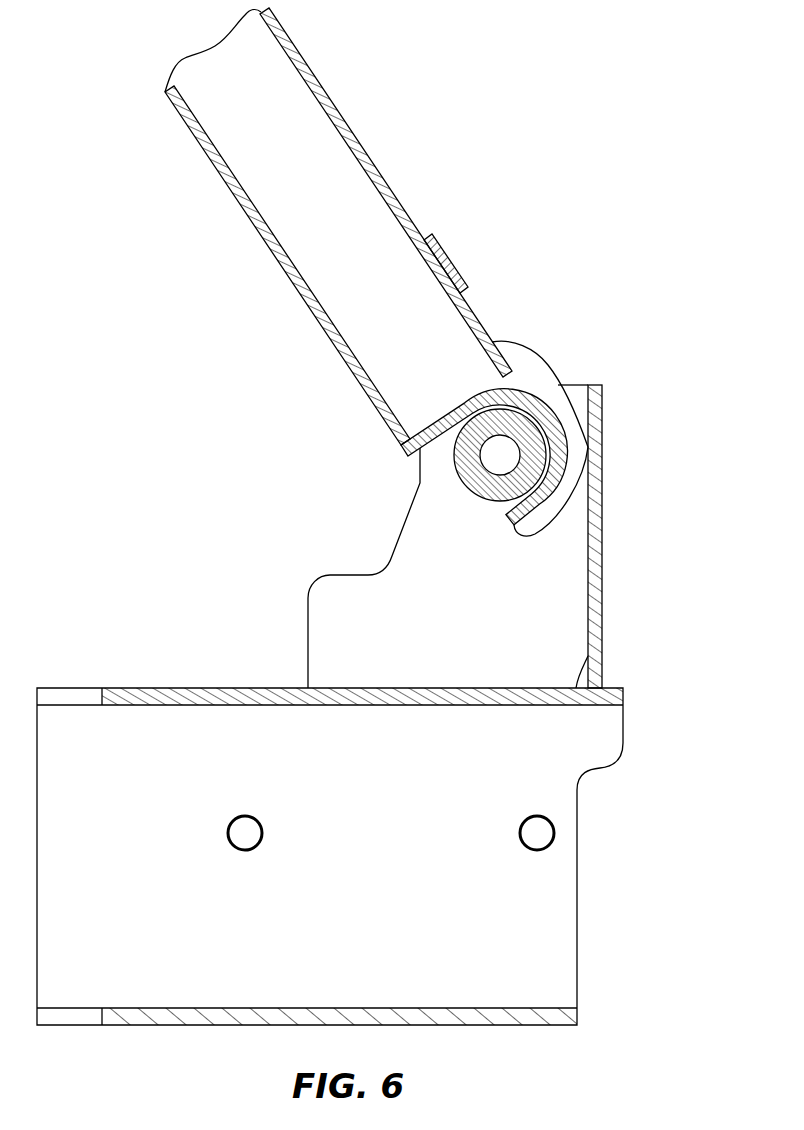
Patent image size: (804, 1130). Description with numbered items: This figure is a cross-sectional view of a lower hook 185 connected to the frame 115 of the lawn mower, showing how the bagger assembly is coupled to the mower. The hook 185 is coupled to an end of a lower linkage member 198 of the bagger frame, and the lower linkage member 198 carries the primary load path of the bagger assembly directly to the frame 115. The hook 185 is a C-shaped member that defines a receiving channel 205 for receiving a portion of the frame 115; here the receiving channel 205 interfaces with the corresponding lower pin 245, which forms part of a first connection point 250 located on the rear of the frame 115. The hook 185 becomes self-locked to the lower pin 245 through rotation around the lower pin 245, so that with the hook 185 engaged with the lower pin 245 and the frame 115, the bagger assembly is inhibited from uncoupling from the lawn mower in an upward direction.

The frame 115 is at (613, 732).
The hook 185 is at (547, 365).
The lower linkage member 198 is at (350, 125).
The receiving channel 205 is at (561, 438).
The lower pin 245 is at (474, 496).
The first connection point 250 is at (392, 487).